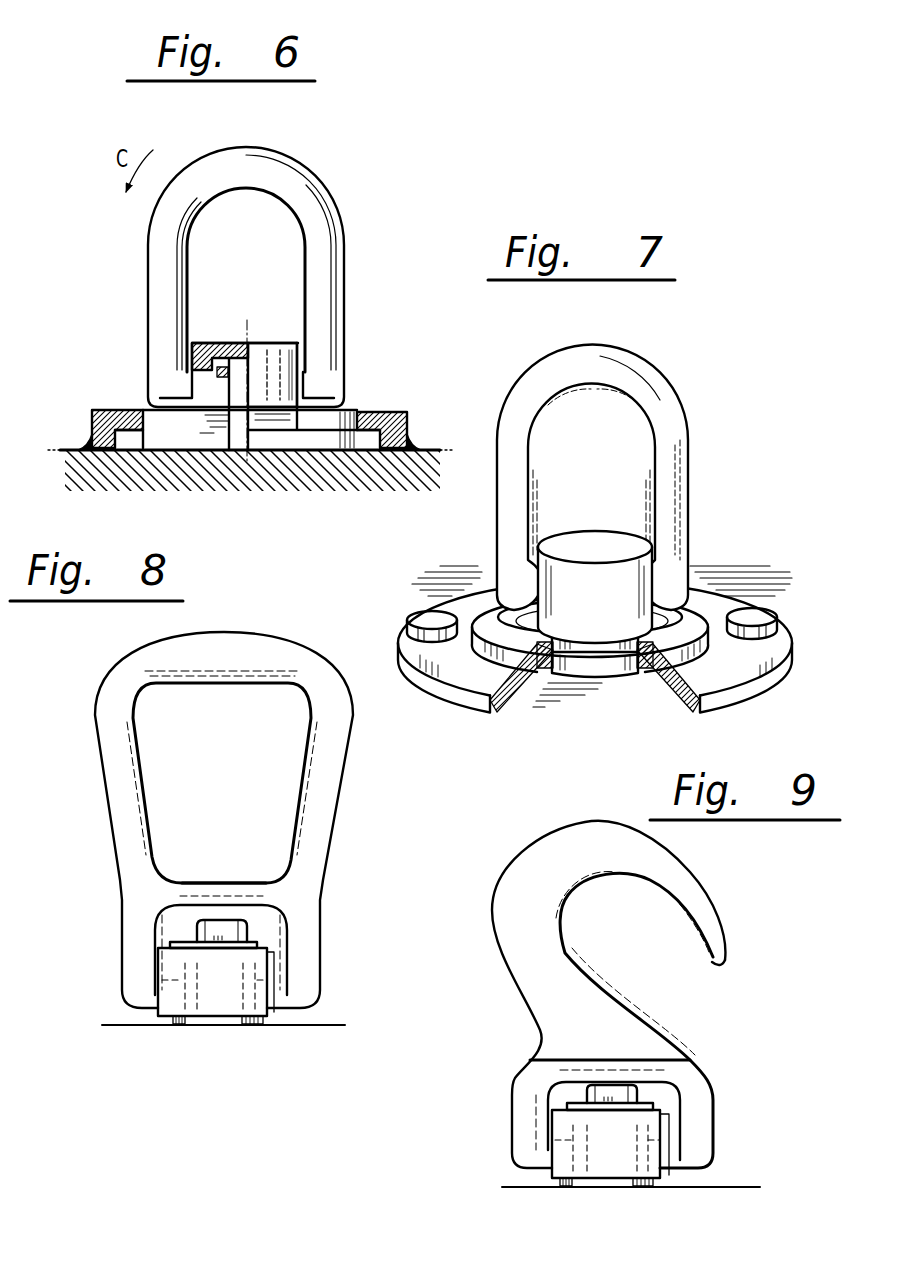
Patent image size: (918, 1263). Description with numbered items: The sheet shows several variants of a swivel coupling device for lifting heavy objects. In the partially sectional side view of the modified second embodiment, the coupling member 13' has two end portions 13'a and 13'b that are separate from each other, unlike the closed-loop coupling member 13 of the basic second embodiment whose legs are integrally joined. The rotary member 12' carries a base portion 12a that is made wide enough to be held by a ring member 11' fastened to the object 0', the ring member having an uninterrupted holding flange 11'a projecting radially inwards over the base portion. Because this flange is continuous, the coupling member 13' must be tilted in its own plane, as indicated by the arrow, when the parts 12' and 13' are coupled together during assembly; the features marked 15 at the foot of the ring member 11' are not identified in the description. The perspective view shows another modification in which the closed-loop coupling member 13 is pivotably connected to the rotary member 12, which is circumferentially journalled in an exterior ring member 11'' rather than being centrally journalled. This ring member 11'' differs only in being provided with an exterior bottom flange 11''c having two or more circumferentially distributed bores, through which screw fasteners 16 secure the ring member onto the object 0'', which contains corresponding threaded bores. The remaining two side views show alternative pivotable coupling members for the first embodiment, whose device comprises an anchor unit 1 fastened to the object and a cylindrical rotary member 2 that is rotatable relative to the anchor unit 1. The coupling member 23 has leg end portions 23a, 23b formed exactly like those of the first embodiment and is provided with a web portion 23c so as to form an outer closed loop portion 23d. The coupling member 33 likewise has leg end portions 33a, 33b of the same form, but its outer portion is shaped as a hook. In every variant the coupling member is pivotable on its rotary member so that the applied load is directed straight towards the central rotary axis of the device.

In FIG. 6, the coupling member 13' is at (266, 277).
In FIG. 6, the rotary member 12' is at (267, 354).
In FIG. 6, the end portion 13'a is at (220, 339).
In FIG. 6, the end portion 13'b is at (280, 353).
In FIG. 6, the ring member 11' is at (241, 403).
In FIG. 6, the uninterrupted holding flange 11'a is at (123, 398).
In FIG. 6, the weld 15 is at (82, 447).
In FIG. 6, the object to be lifted 0' is at (260, 453).
In FIG. 6, the base portion 12a is at (207, 432).
In FIG. 7, the coupling member 13 is at (604, 478).
In FIG. 7, the rotary member 12 is at (595, 550).
In FIG. 7, the object 0'' is at (594, 618).
In FIG. 7, the ring member 11'' is at (607, 604).
In FIG. 7, the screw fasteners 16 is at (424, 614).
In FIG. 7, the exterior bottom flange 11''c is at (595, 658).
In FIG. 8, the coupling member 23 is at (322, 783).
In FIG. 8, the outer closed loop portion 23d is at (152, 763).
In FIG. 8, the web portion 23c is at (206, 898).
In FIG. 8, the anchor unit 1 is at (183, 928).
In FIG. 9, the anchor unit 1 is at (580, 1082).
In FIG. 8, the rotary member 2 is at (170, 967).
In FIG. 9, the rotary member 2 is at (562, 1127).
In FIG. 8, the leg end portion 23a is at (195, 1027).
In FIG. 8, the leg end portion 23b is at (238, 1027).
In FIG. 9, the coupling member 33 is at (505, 917).
In FIG. 9, the leg end portion 33a is at (587, 1188).
In FIG. 9, the leg end portion 33b is at (637, 1188).